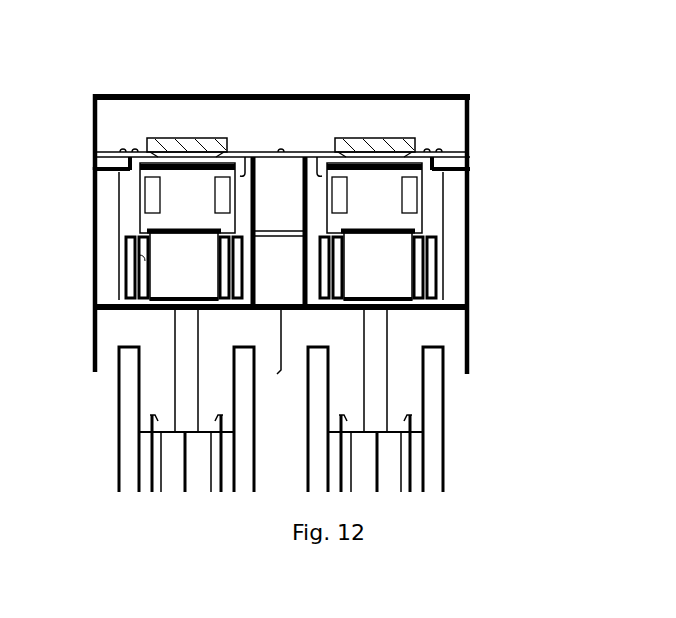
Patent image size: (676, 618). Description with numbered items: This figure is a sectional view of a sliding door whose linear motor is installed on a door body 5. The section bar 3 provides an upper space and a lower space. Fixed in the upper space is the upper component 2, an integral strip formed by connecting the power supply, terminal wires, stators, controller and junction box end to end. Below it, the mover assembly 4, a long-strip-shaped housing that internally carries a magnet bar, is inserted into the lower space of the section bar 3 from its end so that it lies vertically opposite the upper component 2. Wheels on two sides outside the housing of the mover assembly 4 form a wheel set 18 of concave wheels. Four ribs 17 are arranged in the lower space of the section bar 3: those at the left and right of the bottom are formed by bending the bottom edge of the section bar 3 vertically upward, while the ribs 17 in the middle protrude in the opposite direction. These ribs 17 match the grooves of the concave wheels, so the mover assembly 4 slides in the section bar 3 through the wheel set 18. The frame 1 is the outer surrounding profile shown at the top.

The frame profile 1 is at (283, 96).
The upper component 2 is at (380, 190).
The section bar 3 is at (330, 175).
The mover assembly 4 is at (390, 245).
The door body 5 is at (447, 440).
The ribs 17 is at (425, 307).
The wheel set 18 is at (125, 255).